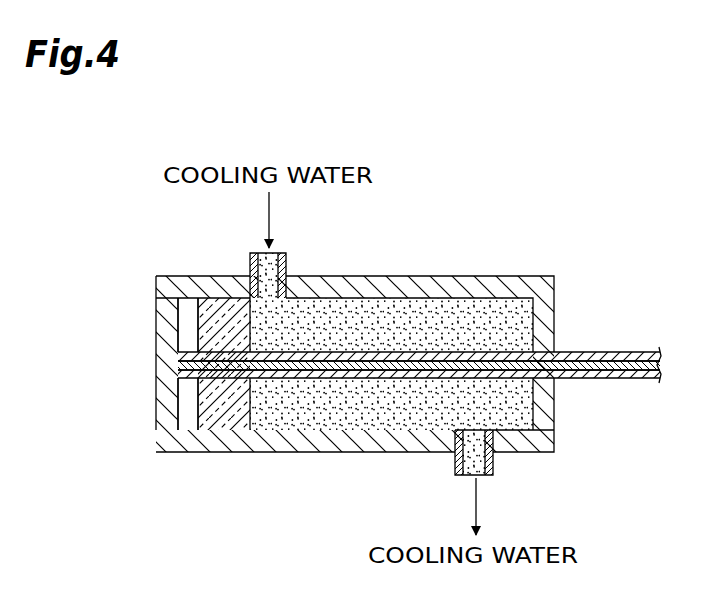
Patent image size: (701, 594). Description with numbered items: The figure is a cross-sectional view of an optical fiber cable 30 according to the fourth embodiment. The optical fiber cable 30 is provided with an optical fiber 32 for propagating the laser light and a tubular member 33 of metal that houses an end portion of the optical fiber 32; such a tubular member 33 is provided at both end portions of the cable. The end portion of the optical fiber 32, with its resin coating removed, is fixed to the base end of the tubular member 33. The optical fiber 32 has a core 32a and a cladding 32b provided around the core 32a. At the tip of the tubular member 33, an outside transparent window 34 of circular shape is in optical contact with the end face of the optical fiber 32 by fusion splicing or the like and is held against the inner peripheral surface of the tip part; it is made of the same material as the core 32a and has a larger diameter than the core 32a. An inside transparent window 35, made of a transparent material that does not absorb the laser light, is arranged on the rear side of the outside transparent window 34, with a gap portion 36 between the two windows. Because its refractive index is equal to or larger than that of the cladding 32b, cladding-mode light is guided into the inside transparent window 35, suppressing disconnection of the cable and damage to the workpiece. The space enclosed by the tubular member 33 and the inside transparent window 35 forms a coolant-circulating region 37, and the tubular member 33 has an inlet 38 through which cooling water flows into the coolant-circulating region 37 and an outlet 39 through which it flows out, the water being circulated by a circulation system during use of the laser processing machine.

The optical fiber cable 30 is at (506, 190).
The optical fiber 32 is at (629, 340).
The core 32a is at (570, 370).
The cladding 32b is at (625, 379).
The tubular member 33 is at (420, 283).
The outside transparent window 34 is at (163, 357).
The inside transparent window 35 is at (230, 420).
The gap portion 36 is at (190, 307).
The coolant-circulating region 37 is at (362, 425).
The inlet 38 is at (281, 266).
The outlet 39 is at (494, 470).